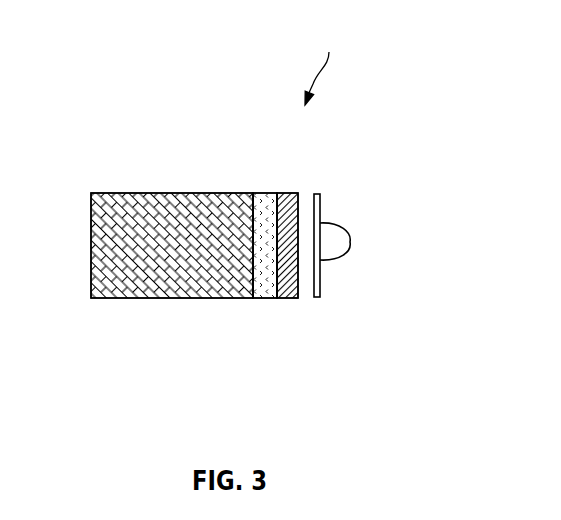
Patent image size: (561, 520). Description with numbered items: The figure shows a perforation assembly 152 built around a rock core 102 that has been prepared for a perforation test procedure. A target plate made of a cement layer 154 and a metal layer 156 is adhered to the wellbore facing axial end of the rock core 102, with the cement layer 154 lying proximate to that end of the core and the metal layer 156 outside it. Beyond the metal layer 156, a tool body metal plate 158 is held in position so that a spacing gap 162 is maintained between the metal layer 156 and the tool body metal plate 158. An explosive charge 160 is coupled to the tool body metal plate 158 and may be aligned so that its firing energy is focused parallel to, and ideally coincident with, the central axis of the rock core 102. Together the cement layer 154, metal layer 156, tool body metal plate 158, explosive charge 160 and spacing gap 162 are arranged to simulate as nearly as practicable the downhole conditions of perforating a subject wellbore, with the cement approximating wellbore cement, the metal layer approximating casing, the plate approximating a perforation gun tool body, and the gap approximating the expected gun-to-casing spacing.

The perforation assembly 152 is at (329, 66).
The rock core 102 is at (120, 193).
The cement layer 154 is at (262, 193).
The metal layer 156 is at (284, 299).
The tool body metal plate 158 is at (317, 193).
The explosive charge 160 is at (350, 242).
The spacing gap 162 is at (305, 299).